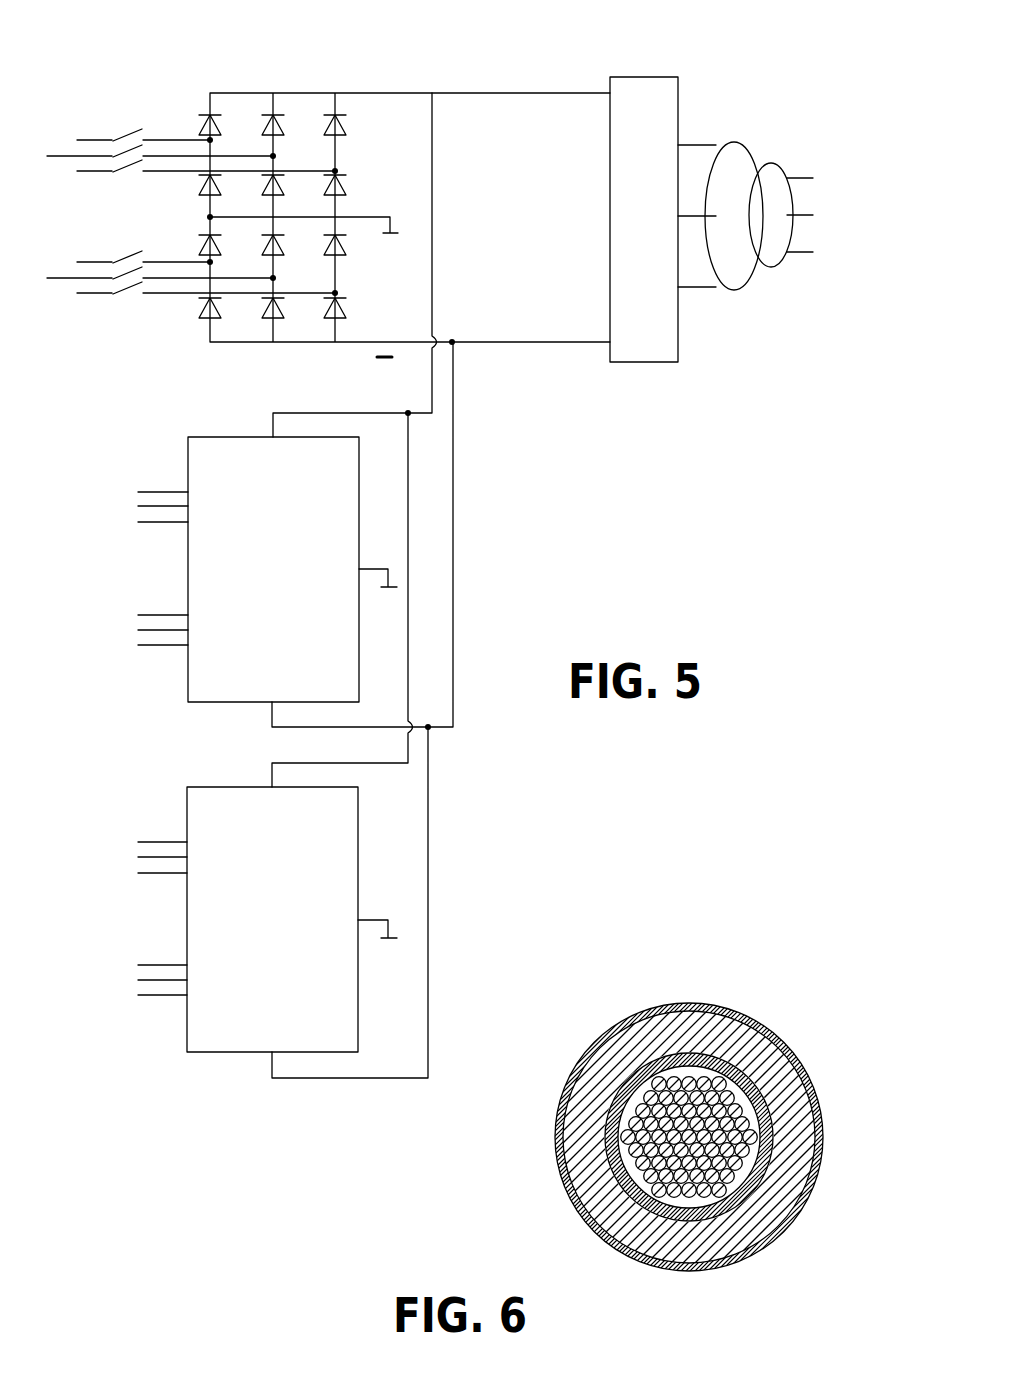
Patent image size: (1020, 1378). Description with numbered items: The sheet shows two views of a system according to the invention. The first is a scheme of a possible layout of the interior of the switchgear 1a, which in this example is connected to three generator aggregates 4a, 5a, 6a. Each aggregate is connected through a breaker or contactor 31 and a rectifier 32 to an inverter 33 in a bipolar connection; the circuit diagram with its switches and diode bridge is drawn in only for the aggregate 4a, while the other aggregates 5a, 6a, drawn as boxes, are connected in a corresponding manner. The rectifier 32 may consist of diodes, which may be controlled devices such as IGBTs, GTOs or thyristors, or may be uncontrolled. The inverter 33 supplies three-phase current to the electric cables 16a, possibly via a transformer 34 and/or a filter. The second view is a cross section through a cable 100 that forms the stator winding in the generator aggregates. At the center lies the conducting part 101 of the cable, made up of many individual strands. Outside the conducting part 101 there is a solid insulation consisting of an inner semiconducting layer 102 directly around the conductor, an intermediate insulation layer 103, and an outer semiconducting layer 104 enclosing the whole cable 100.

In FIG. 5, the switchgear 1a is at (618, 513).
In FIG. 5, the aggregate 4a is at (175, 162).
In FIG. 5, the aggregate 5a is at (222, 569).
In FIG. 5, the aggregate 6a is at (222, 919).
In FIG. 5, the electric cables 16a is at (798, 253).
In FIG. 5, the breaker or contactor 31 is at (125, 110).
In FIG. 5, the rectifier 32 is at (363, 113).
In FIG. 5, the inverter 33 is at (652, 103).
In FIG. 5, the transformer 34 is at (730, 165).
In FIG. 6, the cable 100 is at (674, 1137).
In FIG. 6, the conducting part 101 is at (617, 1165).
In FIG. 6, the inner semiconducting layer 102 is at (750, 1180).
In FIG. 6, the intermediate insulation layer 103 is at (810, 1078).
In FIG. 6, the outer semiconducting layer 104 is at (797, 1127).